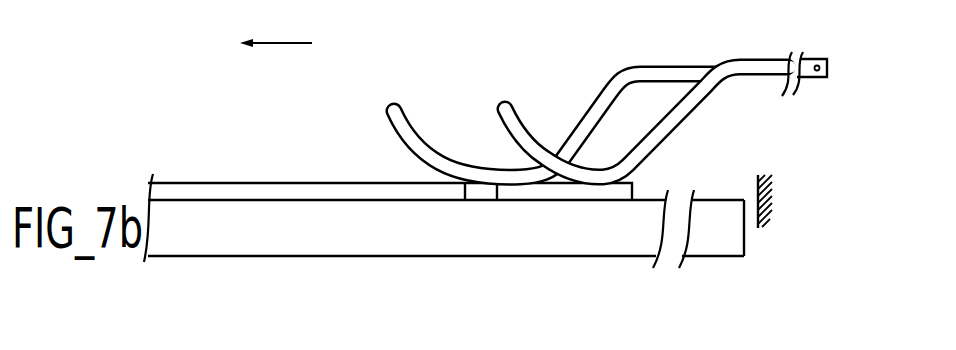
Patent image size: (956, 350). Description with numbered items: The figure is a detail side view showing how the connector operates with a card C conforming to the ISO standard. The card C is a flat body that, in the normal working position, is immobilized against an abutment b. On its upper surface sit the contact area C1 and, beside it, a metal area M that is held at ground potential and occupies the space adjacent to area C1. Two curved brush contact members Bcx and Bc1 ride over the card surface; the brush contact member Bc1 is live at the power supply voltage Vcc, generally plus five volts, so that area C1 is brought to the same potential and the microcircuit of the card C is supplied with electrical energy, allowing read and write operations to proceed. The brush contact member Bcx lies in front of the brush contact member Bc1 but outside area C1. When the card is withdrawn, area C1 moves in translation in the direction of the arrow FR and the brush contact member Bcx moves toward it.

The card C is at (496, 248).
The area C1 is at (608, 192).
The metal area M is at (184, 186).
The brush contact member Bcx is at (646, 56).
The brush contact member Bc1 is at (735, 50).
The power supply voltage Vcc is at (828, 66).
The abutment b is at (776, 200).
The arrow FR is at (276, 29).